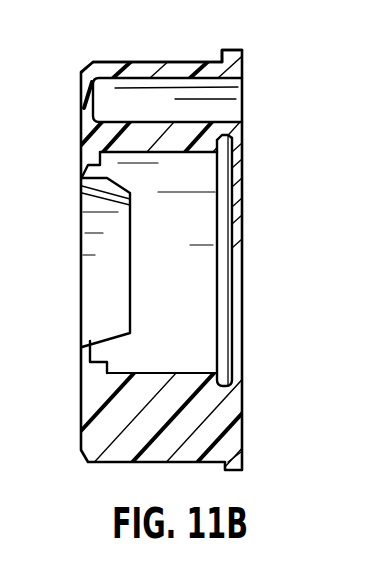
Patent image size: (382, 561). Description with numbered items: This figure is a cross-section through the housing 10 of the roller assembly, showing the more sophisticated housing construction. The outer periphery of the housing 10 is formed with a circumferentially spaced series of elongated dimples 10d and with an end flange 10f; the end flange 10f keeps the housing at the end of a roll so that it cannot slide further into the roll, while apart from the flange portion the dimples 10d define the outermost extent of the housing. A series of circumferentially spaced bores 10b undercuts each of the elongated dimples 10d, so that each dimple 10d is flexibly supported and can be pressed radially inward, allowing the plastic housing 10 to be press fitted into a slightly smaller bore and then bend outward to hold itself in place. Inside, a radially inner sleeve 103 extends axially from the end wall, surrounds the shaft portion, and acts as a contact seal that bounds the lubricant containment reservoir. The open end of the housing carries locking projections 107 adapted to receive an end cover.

The housing 10 is at (242, 297).
The bores 10b is at (240, 88).
The elongated dimples 10d is at (123, 62).
The end flange 10f is at (242, 50).
The radially inner sleeve 103 is at (115, 325).
The locking projections 107 is at (228, 372).